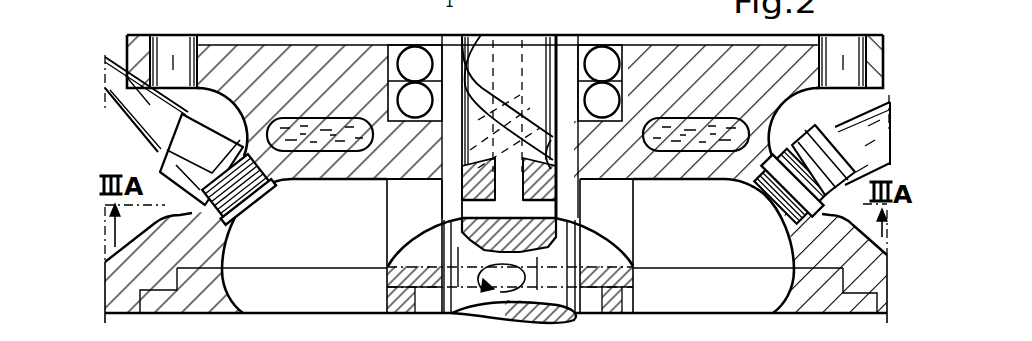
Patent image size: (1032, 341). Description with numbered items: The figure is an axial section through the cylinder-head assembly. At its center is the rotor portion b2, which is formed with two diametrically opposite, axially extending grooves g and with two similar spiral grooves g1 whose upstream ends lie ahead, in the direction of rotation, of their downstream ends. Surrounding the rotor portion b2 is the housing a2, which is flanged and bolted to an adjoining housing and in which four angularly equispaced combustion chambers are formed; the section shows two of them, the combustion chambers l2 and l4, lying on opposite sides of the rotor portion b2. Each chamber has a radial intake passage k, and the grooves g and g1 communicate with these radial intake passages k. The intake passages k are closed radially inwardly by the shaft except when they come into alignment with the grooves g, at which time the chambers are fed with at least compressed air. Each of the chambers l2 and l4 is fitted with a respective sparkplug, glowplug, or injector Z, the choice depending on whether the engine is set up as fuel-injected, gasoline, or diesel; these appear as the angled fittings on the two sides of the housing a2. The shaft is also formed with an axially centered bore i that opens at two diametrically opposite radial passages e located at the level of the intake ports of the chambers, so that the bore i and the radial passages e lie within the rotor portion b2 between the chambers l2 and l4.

The housing a2 is at (291, 50).
The spiral groove g1 is at (488, 43).
The rotor portion b2 is at (568, 291).
The axially extending groove g is at (510, 126).
The radial intake passage k is at (418, 222).
The combustion chamber l2 is at (316, 246).
The combustion chamber l4 is at (714, 247).
The axially centered bore i is at (509, 179).
The radial passage e is at (509, 187).
The sparkplug, glowplug, or injector Z is at (132, 120).